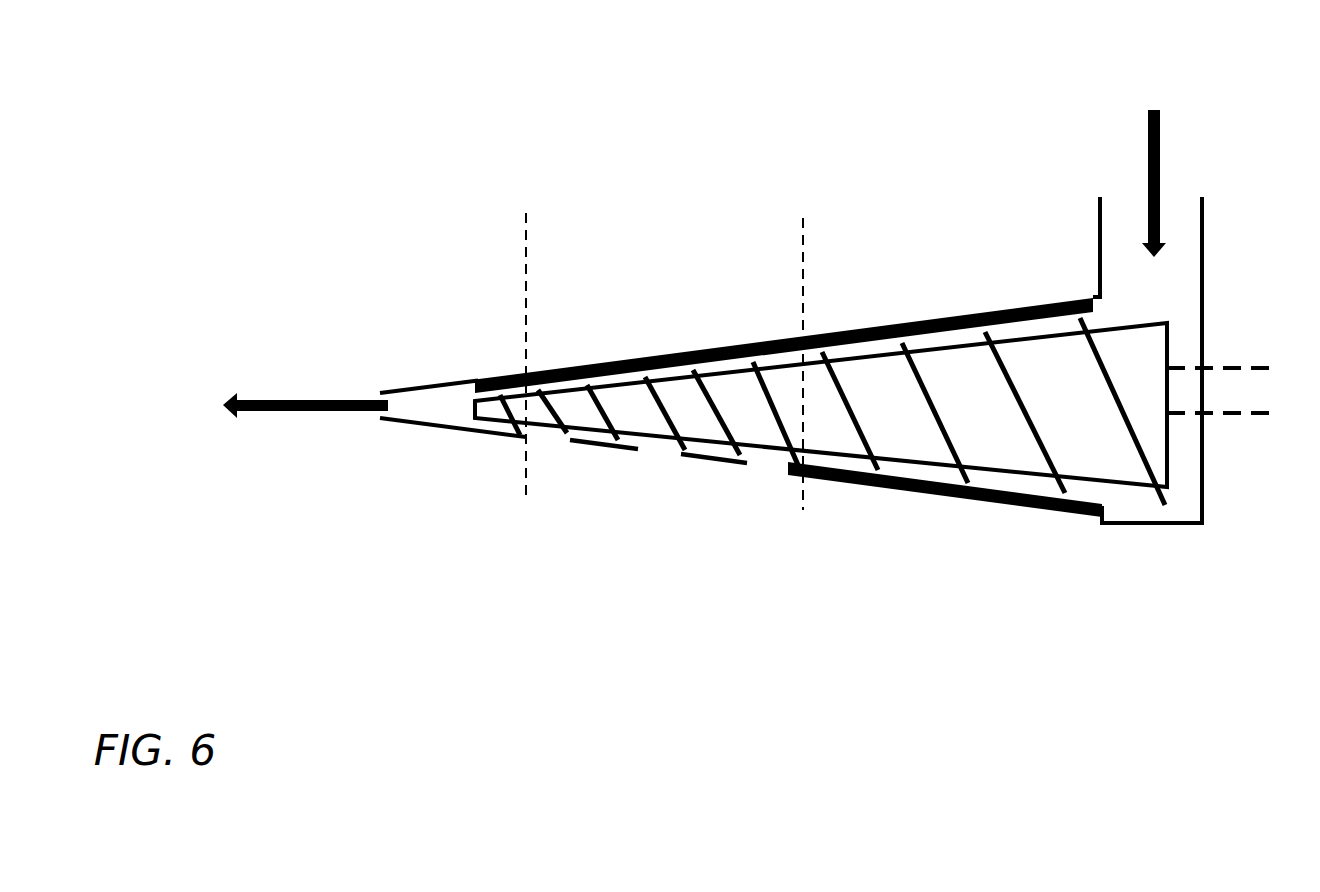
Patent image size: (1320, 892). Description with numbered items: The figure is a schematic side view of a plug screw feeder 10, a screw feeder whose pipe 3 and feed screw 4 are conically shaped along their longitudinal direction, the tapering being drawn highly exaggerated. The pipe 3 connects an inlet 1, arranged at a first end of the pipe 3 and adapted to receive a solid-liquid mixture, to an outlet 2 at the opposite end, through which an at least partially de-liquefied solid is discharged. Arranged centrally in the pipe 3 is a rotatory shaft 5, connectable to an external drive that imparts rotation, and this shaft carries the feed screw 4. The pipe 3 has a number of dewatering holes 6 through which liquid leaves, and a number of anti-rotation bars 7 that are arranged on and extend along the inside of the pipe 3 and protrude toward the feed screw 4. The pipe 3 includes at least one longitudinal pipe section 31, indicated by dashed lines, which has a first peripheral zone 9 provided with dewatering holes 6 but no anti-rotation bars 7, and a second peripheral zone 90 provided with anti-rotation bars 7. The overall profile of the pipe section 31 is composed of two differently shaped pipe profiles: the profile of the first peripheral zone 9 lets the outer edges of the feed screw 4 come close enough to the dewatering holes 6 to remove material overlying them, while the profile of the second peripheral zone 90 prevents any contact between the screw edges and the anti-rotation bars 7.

The inlet 1 is at (1166, 180).
The outlet 2 is at (305, 392).
The pipe 3 is at (662, 353).
The feed screw 4 is at (668, 415).
The rotatory shaft 5 is at (1168, 398).
The dewatering holes 6 is at (765, 467).
The anti-rotation bars 7 is at (936, 318).
The first peripheral zone 9 is at (590, 435).
The plug screw feeder 10 is at (528, 181).
The longitudinal pipe section 31 is at (567, 502).
The second peripheral zone 90 is at (797, 357).